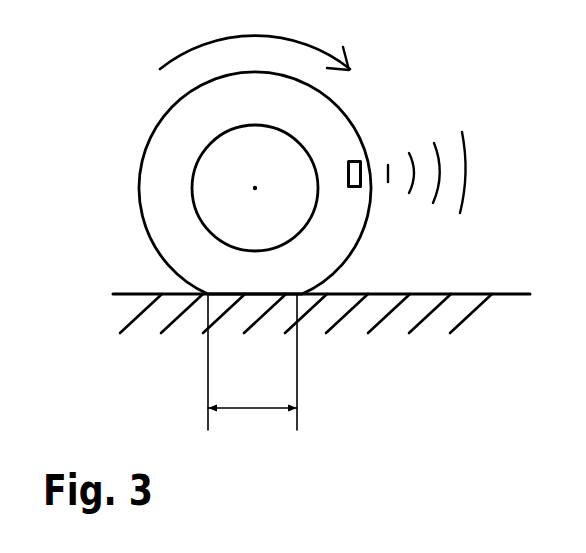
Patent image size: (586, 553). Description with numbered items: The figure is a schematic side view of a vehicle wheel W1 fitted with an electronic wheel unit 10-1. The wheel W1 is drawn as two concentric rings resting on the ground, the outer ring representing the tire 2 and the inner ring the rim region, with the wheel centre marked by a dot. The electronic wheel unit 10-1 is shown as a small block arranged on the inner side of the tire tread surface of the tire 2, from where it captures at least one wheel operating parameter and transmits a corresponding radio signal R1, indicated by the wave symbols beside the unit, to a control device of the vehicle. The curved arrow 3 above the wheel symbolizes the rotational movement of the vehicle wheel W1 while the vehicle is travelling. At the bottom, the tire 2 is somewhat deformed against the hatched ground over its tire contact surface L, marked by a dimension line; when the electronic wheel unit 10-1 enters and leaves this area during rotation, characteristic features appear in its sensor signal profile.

The vehicle wheel W1 is at (219, 183).
The tire 2 is at (158, 195).
The arrow 3 is at (255, 36).
The electronic wheel unit 10-1 is at (362, 183).
The radio signal R1 is at (427, 165).
The tire contact surface L is at (252, 362).